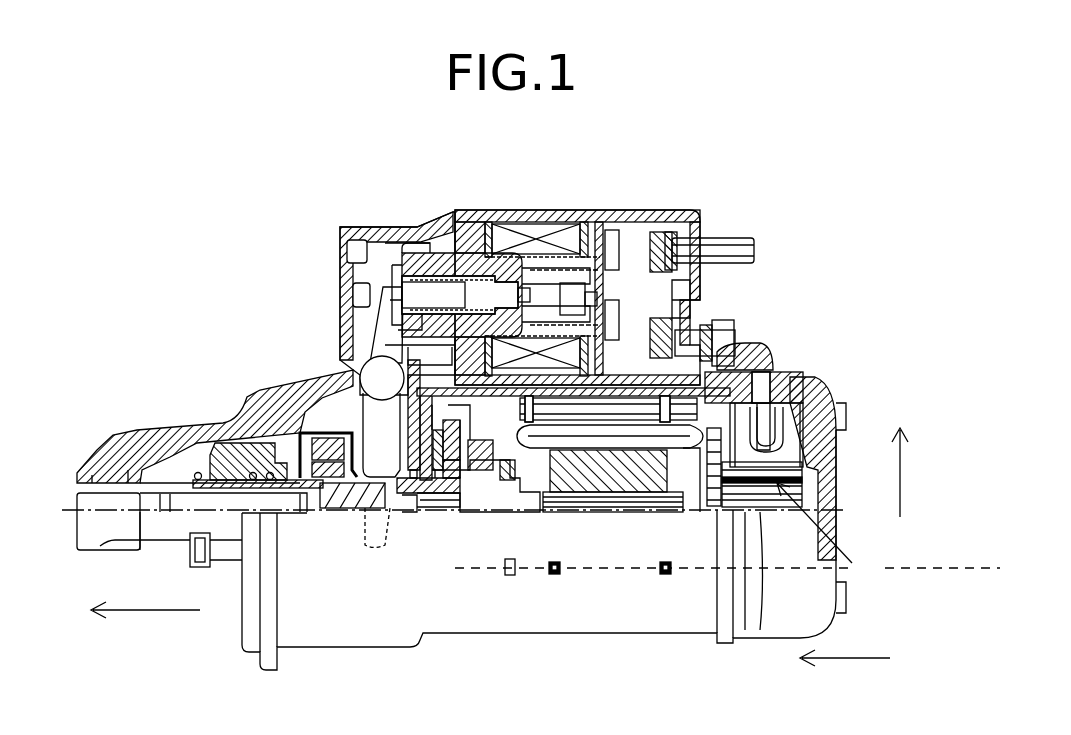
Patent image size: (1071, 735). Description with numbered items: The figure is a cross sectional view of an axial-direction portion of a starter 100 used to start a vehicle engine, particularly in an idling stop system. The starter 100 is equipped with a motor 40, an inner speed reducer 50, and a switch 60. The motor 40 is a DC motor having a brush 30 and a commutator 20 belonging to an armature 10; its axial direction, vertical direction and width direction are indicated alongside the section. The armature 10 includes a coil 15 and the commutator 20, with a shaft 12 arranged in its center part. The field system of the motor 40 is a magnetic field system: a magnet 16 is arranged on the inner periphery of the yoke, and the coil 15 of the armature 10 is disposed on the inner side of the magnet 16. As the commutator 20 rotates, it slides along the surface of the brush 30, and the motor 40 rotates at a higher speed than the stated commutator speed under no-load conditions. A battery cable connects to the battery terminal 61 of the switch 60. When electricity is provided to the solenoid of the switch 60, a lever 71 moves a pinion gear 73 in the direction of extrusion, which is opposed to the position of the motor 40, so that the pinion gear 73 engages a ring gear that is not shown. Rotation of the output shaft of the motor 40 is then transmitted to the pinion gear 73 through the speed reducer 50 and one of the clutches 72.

The starter 100 is at (273, 238).
The armature 10 is at (632, 480).
The shaft 12 is at (445, 512).
The coil 15 is at (598, 428).
The magnet 16 is at (567, 412).
The commutator 20 is at (790, 466).
The brush 30 is at (762, 490).
The motor 40 is at (667, 598).
The inner speed reducer 50 is at (505, 502).
The switch 60 is at (580, 261).
The battery terminal 61 is at (733, 246).
The lever 71 is at (378, 327).
The clutch 72 is at (320, 432).
The pinion gear 73 is at (230, 448).